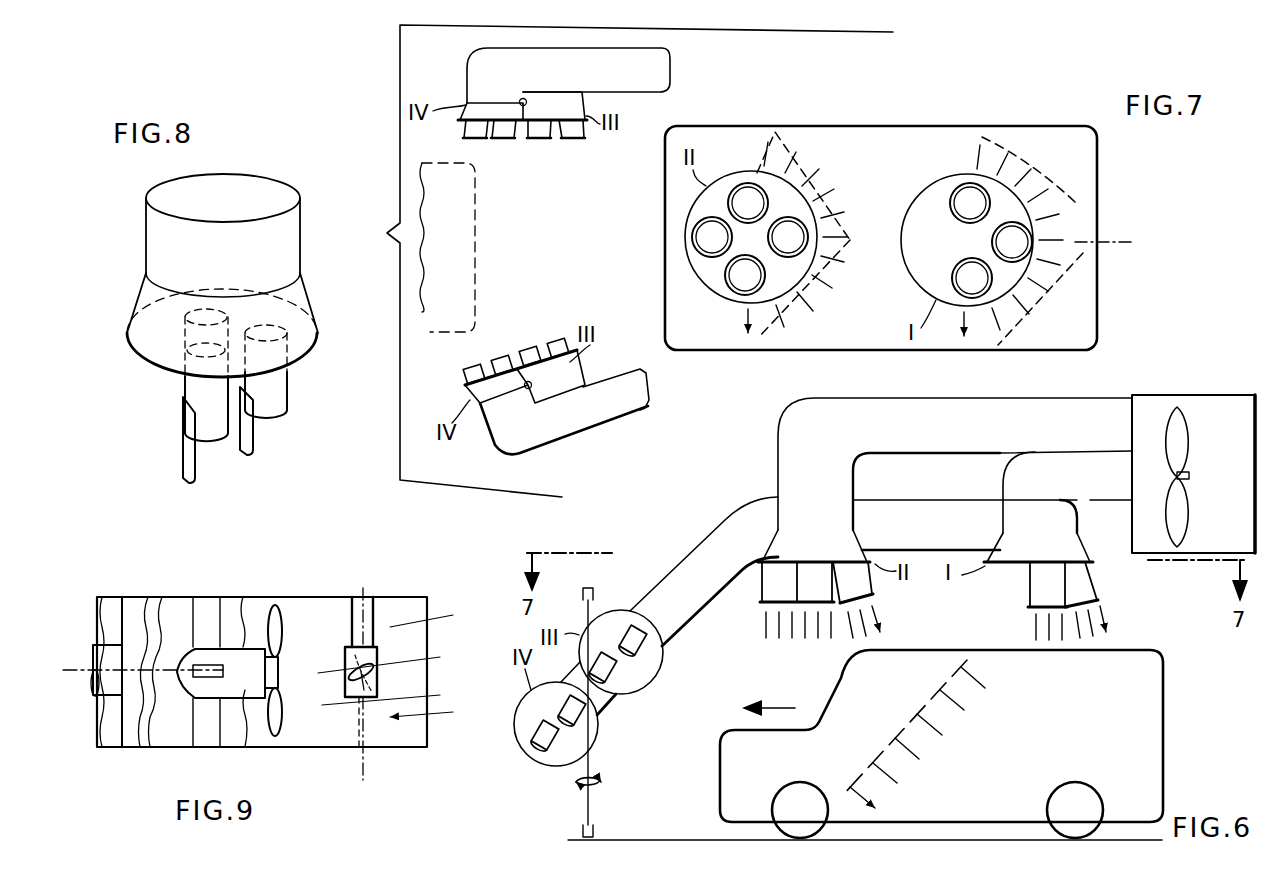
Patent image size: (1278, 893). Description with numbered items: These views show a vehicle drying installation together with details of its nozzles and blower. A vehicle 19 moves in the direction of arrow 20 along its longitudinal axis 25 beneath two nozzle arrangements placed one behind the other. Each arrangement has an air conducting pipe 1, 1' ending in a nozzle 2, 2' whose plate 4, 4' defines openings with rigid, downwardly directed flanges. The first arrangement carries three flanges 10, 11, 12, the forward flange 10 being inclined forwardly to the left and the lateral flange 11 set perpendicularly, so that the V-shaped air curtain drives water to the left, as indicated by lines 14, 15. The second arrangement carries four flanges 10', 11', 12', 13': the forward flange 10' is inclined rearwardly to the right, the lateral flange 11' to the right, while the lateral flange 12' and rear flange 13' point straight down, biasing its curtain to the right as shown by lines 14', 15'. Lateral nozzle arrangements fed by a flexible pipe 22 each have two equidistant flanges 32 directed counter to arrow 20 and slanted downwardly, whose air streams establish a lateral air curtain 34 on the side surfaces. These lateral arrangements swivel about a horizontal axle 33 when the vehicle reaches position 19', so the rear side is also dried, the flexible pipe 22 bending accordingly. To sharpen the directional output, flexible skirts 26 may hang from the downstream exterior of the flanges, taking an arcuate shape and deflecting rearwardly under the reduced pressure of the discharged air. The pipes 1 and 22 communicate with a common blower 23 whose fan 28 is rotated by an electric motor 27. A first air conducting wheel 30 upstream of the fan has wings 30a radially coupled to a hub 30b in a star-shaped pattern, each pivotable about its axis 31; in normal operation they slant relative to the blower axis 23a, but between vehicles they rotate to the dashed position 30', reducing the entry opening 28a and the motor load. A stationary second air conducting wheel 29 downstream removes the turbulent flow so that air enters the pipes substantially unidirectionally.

In FIG. 8, the air conducting pipe 1 is at (237, 235).
In FIG. 6, the air conducting pipe 1 is at (992, 480).
In FIG. 9, the air conducting pipe 1 is at (151, 656).
In FIG. 6, the air conducting pipe 1' is at (939, 461).
In FIG. 8, the nozzle 2 is at (227, 319).
In FIG. 6, the nozzle 2 is at (1018, 536).
In FIG. 6, the nozzle 2' is at (826, 536).
In FIG. 7, the plate 4 is at (956, 249).
In FIG. 6, the plate 4 is at (597, 706).
In FIG. 7, the plate 4' is at (689, 316).
In FIG. 8, the forward flange 10 is at (291, 371).
In FIG. 7, the forward flange 10 is at (976, 238).
In FIG. 6, the forward flange 10 is at (1111, 588).
In FIG. 7, the forward flange 10' is at (818, 210).
In FIG. 6, the forward flange 10' is at (884, 589).
In FIG. 8, the lateral flange 11 is at (208, 430).
In FIG. 7, the lateral flange 11 is at (955, 180).
In FIG. 7, the lateral flange 11' is at (750, 156).
In FIG. 8, the flange 12 is at (175, 351).
In FIG. 7, the flange 12 is at (951, 272).
In FIG. 6, the flange 12 is at (1027, 592).
In FIG. 7, the lateral flange 12' is at (737, 297).
In FIG. 6, the lateral flange 12' is at (804, 614).
In FIG. 7, the rear flange 13' is at (678, 248).
In FIG. 6, the rear flange 13' is at (739, 617).
In FIG. 7, the air curtain line 14 is at (1065, 299).
In FIG. 7, the air curtain line 14' is at (805, 290).
In FIG. 7, the air curtain line 15 is at (1028, 148).
In FIG. 7, the air curtain line 15' is at (805, 165).
In FIG. 7, the vehicle 19 is at (912, 238).
In FIG. 6, the vehicle 19 is at (975, 744).
In FIG. 7, the vehicle position 19' is at (478, 247).
In FIG. 6, the direction of travel arrow 20 is at (778, 706).
In FIG. 7, the air conducting pipe 22 is at (670, 86).
In FIG. 6, the air conducting pipe 22 is at (664, 566).
In FIG. 9, the air conducting pipe 22 is at (110, 606).
In FIG. 6, the blower 23 is at (1228, 402).
In FIG. 9, the blower 23 is at (310, 600).
In FIG. 9, the longitudinal axis 23a is at (95, 660).
In FIG. 7, the longitudinal axis 25 is at (1127, 252).
In FIG. 8, the flexible skirts 26 is at (183, 447).
In FIG. 9, the electric motor 27 is at (246, 610).
In FIG. 9, the fan 28 is at (276, 627).
In FIG. 9, the entry opening 28a is at (427, 706).
In FIG. 9, the second air conducting wheel 29 is at (205, 608).
In FIG. 9, the first air conducting wheel 30 is at (347, 662).
In FIG. 9, the reduced-flow wing position 30' is at (409, 705).
In FIG. 9, the wings 30a is at (375, 618).
In FIG. 9, the hub 30b is at (377, 688).
In FIG. 9, the wing axis 31 is at (368, 596).
In FIG. 7, the flanges 32 is at (476, 140).
In FIG. 6, the flanges 32 is at (630, 655).
In FIG. 7, the axle 33 is at (521, 100).
In FIG. 6, the axle 33 is at (598, 790).
In FIG. 6, the lateral air curtain 34 is at (895, 735).